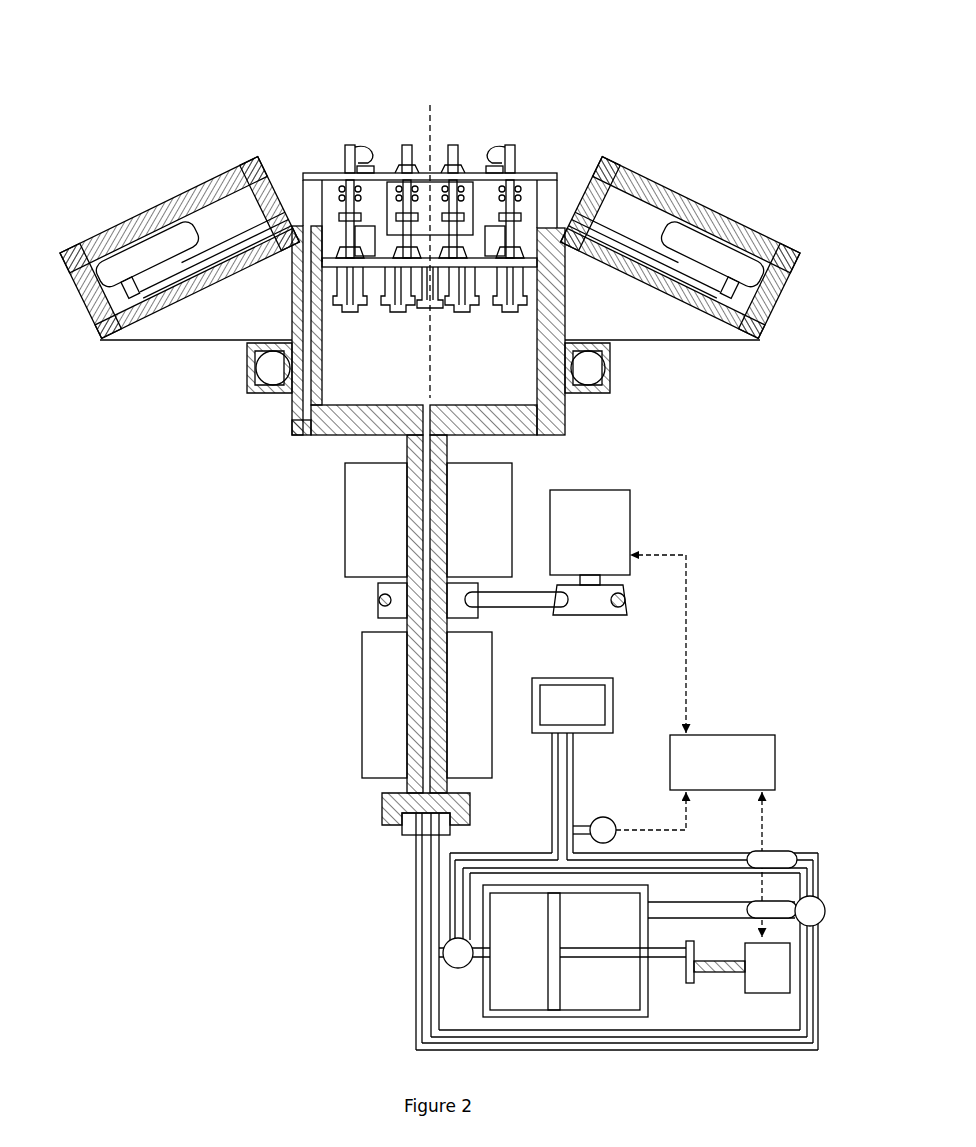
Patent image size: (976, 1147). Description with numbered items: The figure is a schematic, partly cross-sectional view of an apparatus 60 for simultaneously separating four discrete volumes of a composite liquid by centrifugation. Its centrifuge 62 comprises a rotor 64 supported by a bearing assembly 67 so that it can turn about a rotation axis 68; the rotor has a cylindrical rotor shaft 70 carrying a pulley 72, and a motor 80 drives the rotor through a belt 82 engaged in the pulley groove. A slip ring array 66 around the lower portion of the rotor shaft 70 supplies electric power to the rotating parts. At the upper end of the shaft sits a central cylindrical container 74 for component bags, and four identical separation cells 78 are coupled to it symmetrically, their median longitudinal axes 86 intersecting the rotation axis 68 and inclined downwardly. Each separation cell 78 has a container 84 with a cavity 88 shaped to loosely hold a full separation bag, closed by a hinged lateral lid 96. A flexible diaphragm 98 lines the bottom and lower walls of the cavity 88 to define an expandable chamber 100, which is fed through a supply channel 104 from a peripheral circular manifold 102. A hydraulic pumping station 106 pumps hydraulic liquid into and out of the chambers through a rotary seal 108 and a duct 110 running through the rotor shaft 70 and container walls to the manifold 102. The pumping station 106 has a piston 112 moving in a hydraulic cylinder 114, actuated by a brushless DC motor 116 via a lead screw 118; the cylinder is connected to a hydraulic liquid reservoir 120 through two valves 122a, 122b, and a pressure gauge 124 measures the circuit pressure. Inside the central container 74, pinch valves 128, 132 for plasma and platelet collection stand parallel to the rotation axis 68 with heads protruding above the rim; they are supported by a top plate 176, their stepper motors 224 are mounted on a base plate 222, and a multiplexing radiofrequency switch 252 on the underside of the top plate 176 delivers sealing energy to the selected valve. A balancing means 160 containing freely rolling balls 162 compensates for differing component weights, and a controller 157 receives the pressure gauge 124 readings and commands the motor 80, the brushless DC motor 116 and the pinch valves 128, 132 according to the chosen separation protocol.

The apparatus 60 is at (411, 649).
The centrifuge 62 is at (384, 203).
The rotor 64 is at (430, 638).
The slip ring array 66 is at (362, 700).
The bearing assembly 67 is at (345, 500).
The rotation axis 68 is at (427, 124).
The rotor shaft 70 is at (400, 786).
The pulley 72 is at (378, 600).
The central cylindrical container 74 is at (417, 398).
The separation cell 78 is at (439, 252).
The motor 80 is at (632, 512).
The belt 82 is at (497, 609).
The container 84 is at (436, 236).
The median longitudinal axis 86 is at (73, 296).
The cavity 88 is at (117, 255).
The hinged lateral lid 96 is at (203, 183).
The flexible diaphragm 98 is at (185, 258).
The expandable chamber 100 is at (760, 287).
The peripheral circular manifold 102 is at (719, 320).
The supply channel 104 is at (158, 312).
The hydraulic pumping station 106 is at (481, 983).
The rotary seal 108 is at (546, 803).
The duct 110 is at (341, 432).
The piston 112 is at (548, 945).
The hydraulic cylinder 114 is at (650, 1002).
The brushless DC motor 116 is at (775, 993).
The lead screw 118 is at (706, 963).
The hydraulic liquid reservoir 120 is at (613, 692).
The valve 122a is at (447, 965).
The valve 122b is at (805, 896).
The pressure gauge 124 is at (607, 816).
The pinch valve 128 is at (503, 150).
The pinch valve 132 is at (352, 145).
The controller 157 is at (743, 735).
The balancing means 160 is at (613, 372).
The balls 162 is at (585, 368).
The top plate 176 is at (325, 176).
The base plate 222 is at (303, 268).
The stepper motor 224 is at (352, 314).
The multiplexing radiofrequency switch 252 is at (482, 208).